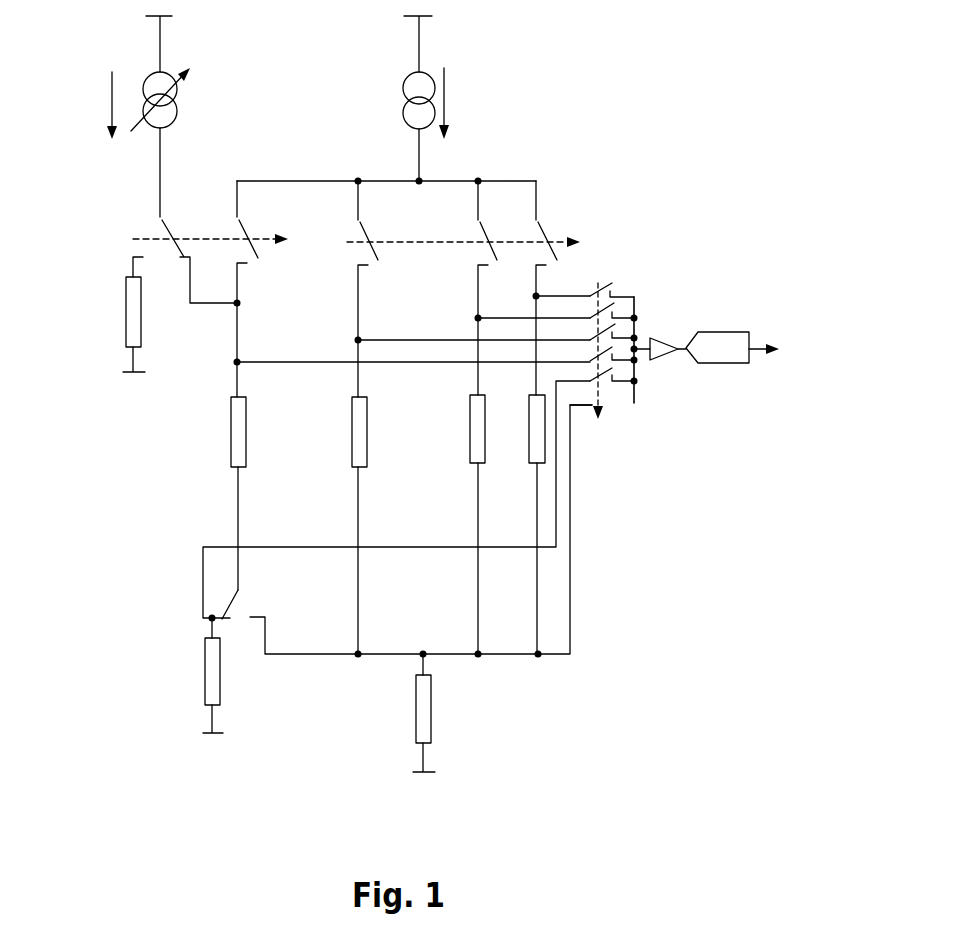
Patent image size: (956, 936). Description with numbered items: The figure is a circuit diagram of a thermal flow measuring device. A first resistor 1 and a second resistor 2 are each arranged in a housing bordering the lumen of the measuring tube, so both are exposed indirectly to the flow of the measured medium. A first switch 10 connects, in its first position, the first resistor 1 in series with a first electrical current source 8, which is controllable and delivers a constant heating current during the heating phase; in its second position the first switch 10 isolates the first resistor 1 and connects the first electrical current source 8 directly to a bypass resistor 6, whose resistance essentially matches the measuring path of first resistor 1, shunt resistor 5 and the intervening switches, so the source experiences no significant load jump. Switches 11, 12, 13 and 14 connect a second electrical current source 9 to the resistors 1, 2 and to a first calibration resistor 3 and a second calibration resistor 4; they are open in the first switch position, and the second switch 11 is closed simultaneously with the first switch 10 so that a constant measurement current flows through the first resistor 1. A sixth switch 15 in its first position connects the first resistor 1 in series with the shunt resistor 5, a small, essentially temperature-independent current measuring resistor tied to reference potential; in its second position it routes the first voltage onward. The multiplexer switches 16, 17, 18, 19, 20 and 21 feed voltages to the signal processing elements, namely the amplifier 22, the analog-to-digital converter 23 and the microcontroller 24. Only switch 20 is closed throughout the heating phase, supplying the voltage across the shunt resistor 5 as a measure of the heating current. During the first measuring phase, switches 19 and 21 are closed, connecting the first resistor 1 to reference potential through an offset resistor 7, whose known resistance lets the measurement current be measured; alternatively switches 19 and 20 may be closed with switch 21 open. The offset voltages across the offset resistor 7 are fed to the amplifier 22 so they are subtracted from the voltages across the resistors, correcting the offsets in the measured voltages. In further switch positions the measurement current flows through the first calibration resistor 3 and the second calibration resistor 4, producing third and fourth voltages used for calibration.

The first resistor 1 is at (243, 433).
The second resistor 2 is at (364, 449).
The first calibration resistor 3 is at (472, 407).
The second calibration resistor 4 is at (531, 433).
The shunt resistor 5 is at (216, 680).
The bypass resistor 6 is at (137, 328).
The offset resistor 7 is at (428, 713).
The first electrical current source 8 is at (178, 104).
The second electrical current source 9 is at (401, 99).
The first switch 10 is at (168, 226).
The second switch 11 is at (244, 226).
The third switch 12 is at (366, 226).
The fourth switch 13 is at (485, 226).
The fifth switch 14 is at (548, 224).
The sixth switch 15 is at (236, 596).
The multiplexer switch 16 is at (612, 283).
The multiplexer switch 17 is at (614, 303).
The multiplexer switch 18 is at (615, 324).
The multiplexer switch 19 is at (600, 352).
The multiplexer switch 20 is at (612, 398).
The multiplexer switch 21 is at (588, 405).
The amplifier 22 is at (668, 347).
The analog-to-digital converter 23 is at (730, 361).
The microcontroller 24 is at (811, 348).